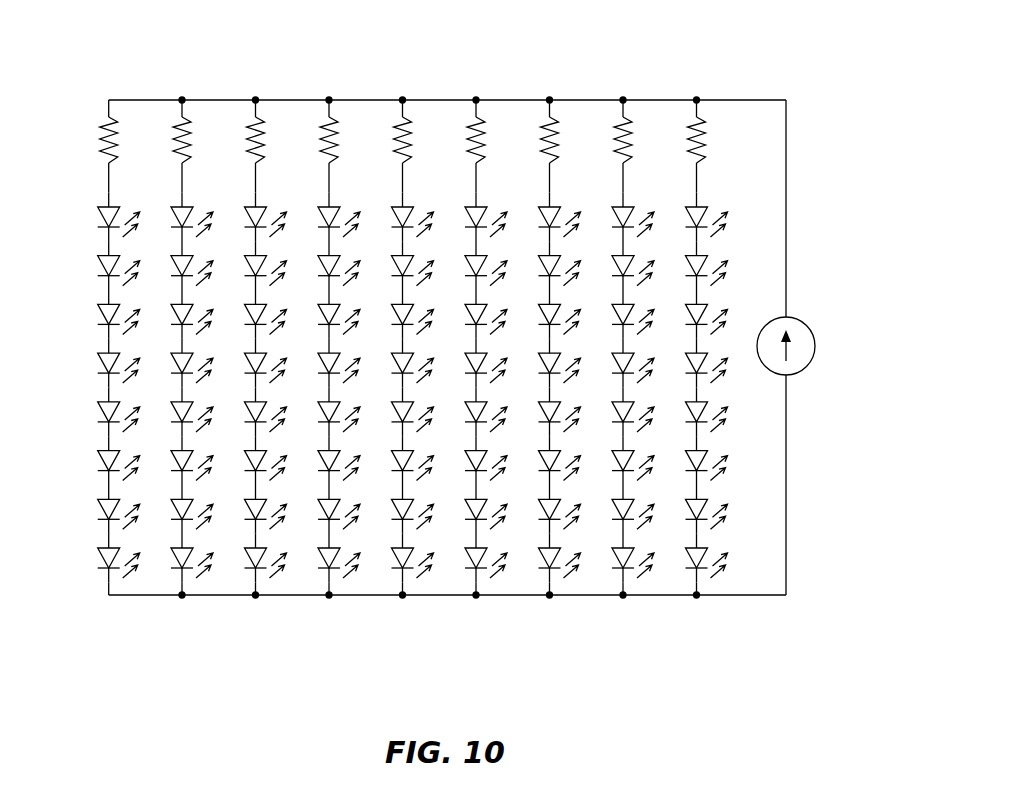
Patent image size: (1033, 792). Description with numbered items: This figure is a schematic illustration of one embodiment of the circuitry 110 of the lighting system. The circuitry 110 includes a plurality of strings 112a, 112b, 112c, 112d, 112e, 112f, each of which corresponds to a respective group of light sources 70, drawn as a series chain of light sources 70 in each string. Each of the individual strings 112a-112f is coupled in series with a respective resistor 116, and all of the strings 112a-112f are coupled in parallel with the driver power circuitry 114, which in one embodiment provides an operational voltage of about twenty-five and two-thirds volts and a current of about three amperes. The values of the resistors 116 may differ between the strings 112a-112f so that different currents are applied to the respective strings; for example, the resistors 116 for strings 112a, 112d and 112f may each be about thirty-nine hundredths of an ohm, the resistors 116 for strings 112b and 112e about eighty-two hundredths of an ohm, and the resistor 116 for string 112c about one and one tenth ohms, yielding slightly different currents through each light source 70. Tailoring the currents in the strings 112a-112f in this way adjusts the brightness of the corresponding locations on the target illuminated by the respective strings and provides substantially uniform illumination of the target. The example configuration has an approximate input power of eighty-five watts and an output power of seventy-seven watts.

The circuitry 110 is at (816, 152).
The string 112a is at (181, 90).
The string 112b is at (255, 90).
The string 112c is at (329, 90).
The string 112d is at (475, 90).
The string 112e is at (549, 90).
The string 112f is at (696, 90).
The driver power circuitry 114 is at (796, 338).
The resistor 116 is at (87, 129).
The light source 70 is at (102, 201).